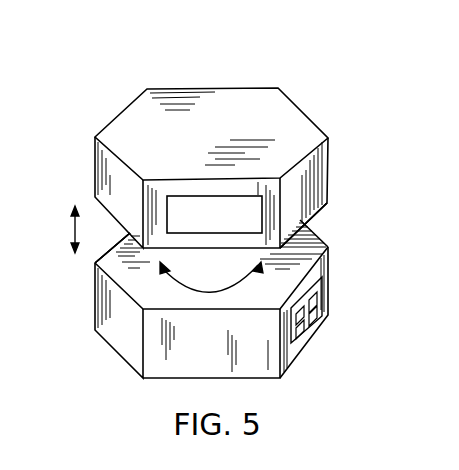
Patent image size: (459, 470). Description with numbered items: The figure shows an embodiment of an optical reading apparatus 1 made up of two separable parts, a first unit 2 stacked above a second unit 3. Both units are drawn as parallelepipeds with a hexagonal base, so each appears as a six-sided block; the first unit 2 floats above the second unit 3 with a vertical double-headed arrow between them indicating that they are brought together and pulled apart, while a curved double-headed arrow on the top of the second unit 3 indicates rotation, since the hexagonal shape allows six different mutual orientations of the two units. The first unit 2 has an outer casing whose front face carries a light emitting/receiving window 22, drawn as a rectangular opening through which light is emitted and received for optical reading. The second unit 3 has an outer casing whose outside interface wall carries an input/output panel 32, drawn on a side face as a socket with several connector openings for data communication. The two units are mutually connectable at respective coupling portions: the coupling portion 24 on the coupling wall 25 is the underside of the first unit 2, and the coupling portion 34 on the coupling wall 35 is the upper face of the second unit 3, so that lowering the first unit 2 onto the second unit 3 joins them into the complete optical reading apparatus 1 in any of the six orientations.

The optical reading apparatus 1 is at (297, 80).
The first unit 2 is at (274, 127).
The second unit 3 is at (123, 320).
The light emitting/receiving window 22 is at (185, 203).
The coupling portion 24 is at (312, 216).
The coupling wall 25 is at (303, 225).
The input/output panel 32 is at (318, 297).
The coupling portion 34 is at (130, 276).
The coupling wall 35 is at (112, 248).